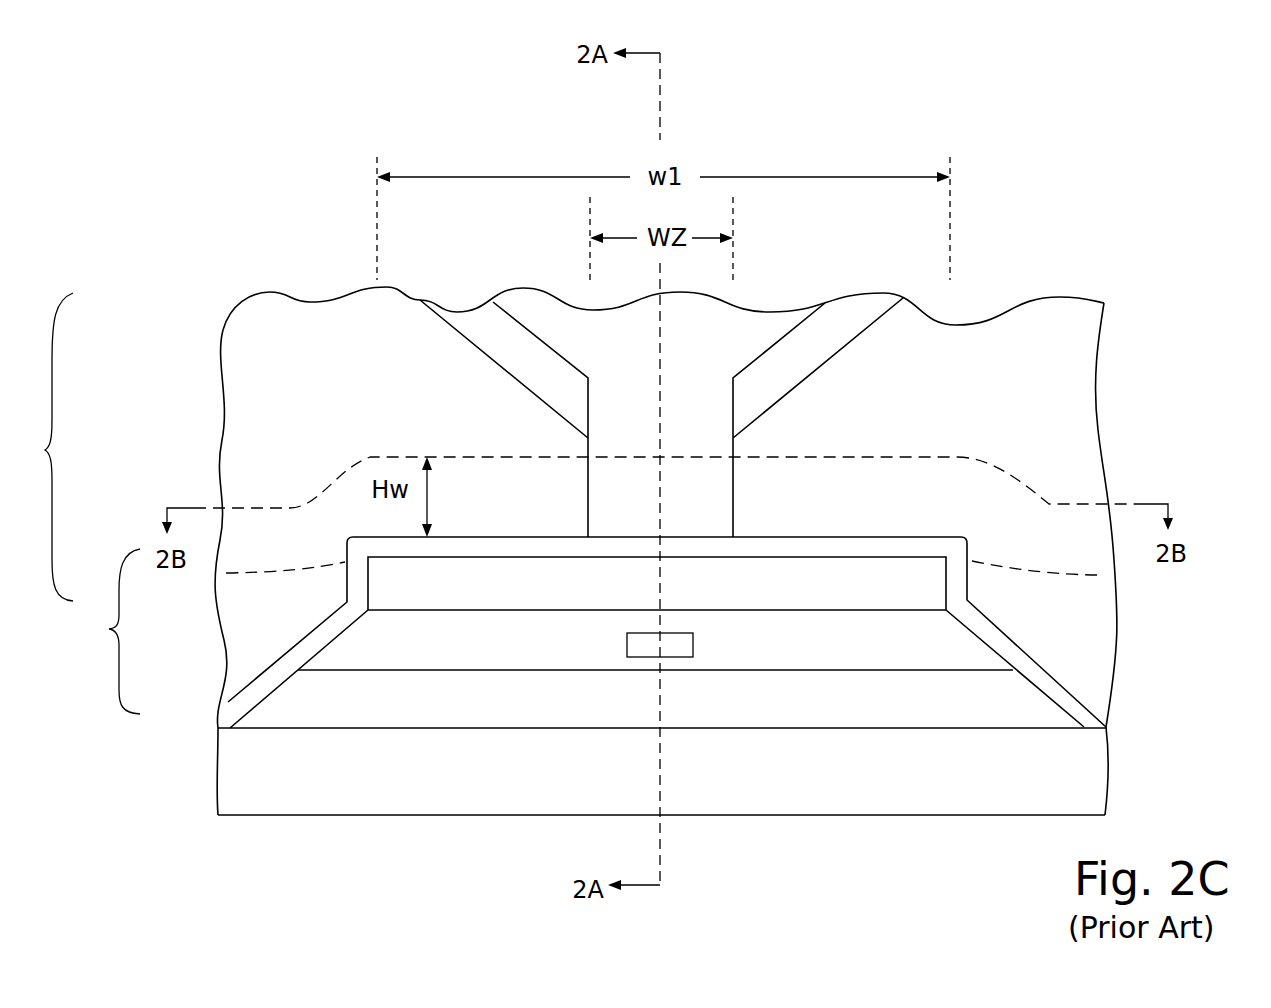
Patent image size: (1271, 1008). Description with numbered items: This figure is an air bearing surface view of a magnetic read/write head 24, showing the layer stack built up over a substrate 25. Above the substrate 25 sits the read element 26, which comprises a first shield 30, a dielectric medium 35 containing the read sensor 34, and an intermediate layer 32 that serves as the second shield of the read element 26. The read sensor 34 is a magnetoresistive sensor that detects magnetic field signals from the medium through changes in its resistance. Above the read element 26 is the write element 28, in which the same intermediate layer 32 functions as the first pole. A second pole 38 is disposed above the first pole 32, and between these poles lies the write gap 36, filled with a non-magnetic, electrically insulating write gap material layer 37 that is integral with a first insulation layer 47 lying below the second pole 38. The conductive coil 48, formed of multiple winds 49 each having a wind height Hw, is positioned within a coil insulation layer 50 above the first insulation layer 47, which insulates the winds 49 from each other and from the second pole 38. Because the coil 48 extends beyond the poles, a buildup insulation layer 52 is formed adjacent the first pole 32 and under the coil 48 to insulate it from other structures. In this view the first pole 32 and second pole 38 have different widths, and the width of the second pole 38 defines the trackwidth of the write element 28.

The magnetic read/write head 24 is at (1004, 190).
The substrate 25 is at (242, 800).
The read element 26 is at (108, 631).
The write element 28 is at (44, 447).
The first shield 30 is at (316, 706).
The intermediate layer 32 is at (393, 593).
The read sensor 34 is at (643, 647).
The dielectric medium 35 is at (383, 650).
The write gap 36 is at (566, 548).
The write gap material layer 37 is at (707, 548).
The second pole 38 is at (678, 506).
The first insulation layer 47 is at (1060, 694).
The conductive coil 48 is at (942, 443).
The winds 49 is at (1015, 481).
The coil insulation layer 50 is at (298, 379).
The buildup insulation layer 52 is at (243, 626).